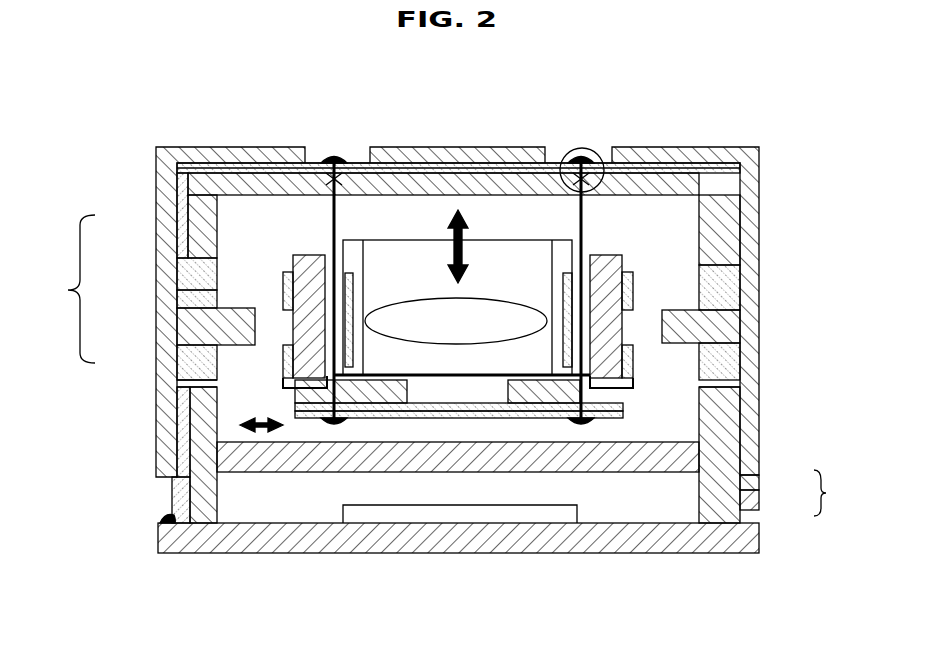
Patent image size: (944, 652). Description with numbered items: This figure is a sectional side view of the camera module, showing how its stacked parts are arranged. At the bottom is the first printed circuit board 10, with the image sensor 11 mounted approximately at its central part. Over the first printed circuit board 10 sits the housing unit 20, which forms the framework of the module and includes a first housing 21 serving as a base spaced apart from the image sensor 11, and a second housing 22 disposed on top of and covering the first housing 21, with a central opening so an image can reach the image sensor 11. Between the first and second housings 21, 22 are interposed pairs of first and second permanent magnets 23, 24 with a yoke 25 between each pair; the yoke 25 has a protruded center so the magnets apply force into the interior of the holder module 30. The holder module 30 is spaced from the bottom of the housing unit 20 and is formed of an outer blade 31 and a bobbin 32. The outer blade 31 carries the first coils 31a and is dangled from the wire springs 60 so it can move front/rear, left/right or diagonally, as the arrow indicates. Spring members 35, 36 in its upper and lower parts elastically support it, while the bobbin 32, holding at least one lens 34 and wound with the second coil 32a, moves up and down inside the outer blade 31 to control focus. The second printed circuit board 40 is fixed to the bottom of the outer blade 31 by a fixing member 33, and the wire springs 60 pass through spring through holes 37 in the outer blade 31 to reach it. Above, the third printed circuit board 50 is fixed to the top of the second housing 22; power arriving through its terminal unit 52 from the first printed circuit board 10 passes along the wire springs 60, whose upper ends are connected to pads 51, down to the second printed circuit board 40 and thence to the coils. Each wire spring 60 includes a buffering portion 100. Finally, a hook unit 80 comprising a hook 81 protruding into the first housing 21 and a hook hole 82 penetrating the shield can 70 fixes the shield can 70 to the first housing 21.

The first printed circuit board 10 is at (540, 540).
The image sensor 11 is at (468, 515).
The housing unit 20 is at (67, 289).
The first housing 21 is at (200, 392).
The second housing 22 is at (200, 240).
The first permanent magnet 23 is at (200, 345).
The second permanent magnet 24 is at (200, 282).
The yoke 25 is at (200, 309).
The holder module 30 is at (650, 262).
The outer blade 31 is at (300, 396).
The first coil 31a is at (288, 276).
The bobbin 32 is at (365, 268).
The second coil 32a is at (352, 345).
The fixing member 33 is at (295, 418).
The lens 34 is at (470, 305).
The spring member 35 is at (318, 256).
The spring member 36 is at (715, 328).
The spring through hole 37 is at (600, 408).
The second printed circuit board 40 is at (400, 448).
The third printed circuit board 50 is at (200, 164).
The pad 51 is at (340, 178).
The terminal unit 52 is at (172, 498).
The wire spring 60 is at (340, 225).
The shield can 70 is at (160, 152).
The hook unit 80 is at (834, 493).
The hook 81 is at (760, 500).
The hook hole 82 is at (760, 482).
The buffering portion 100 is at (605, 175).